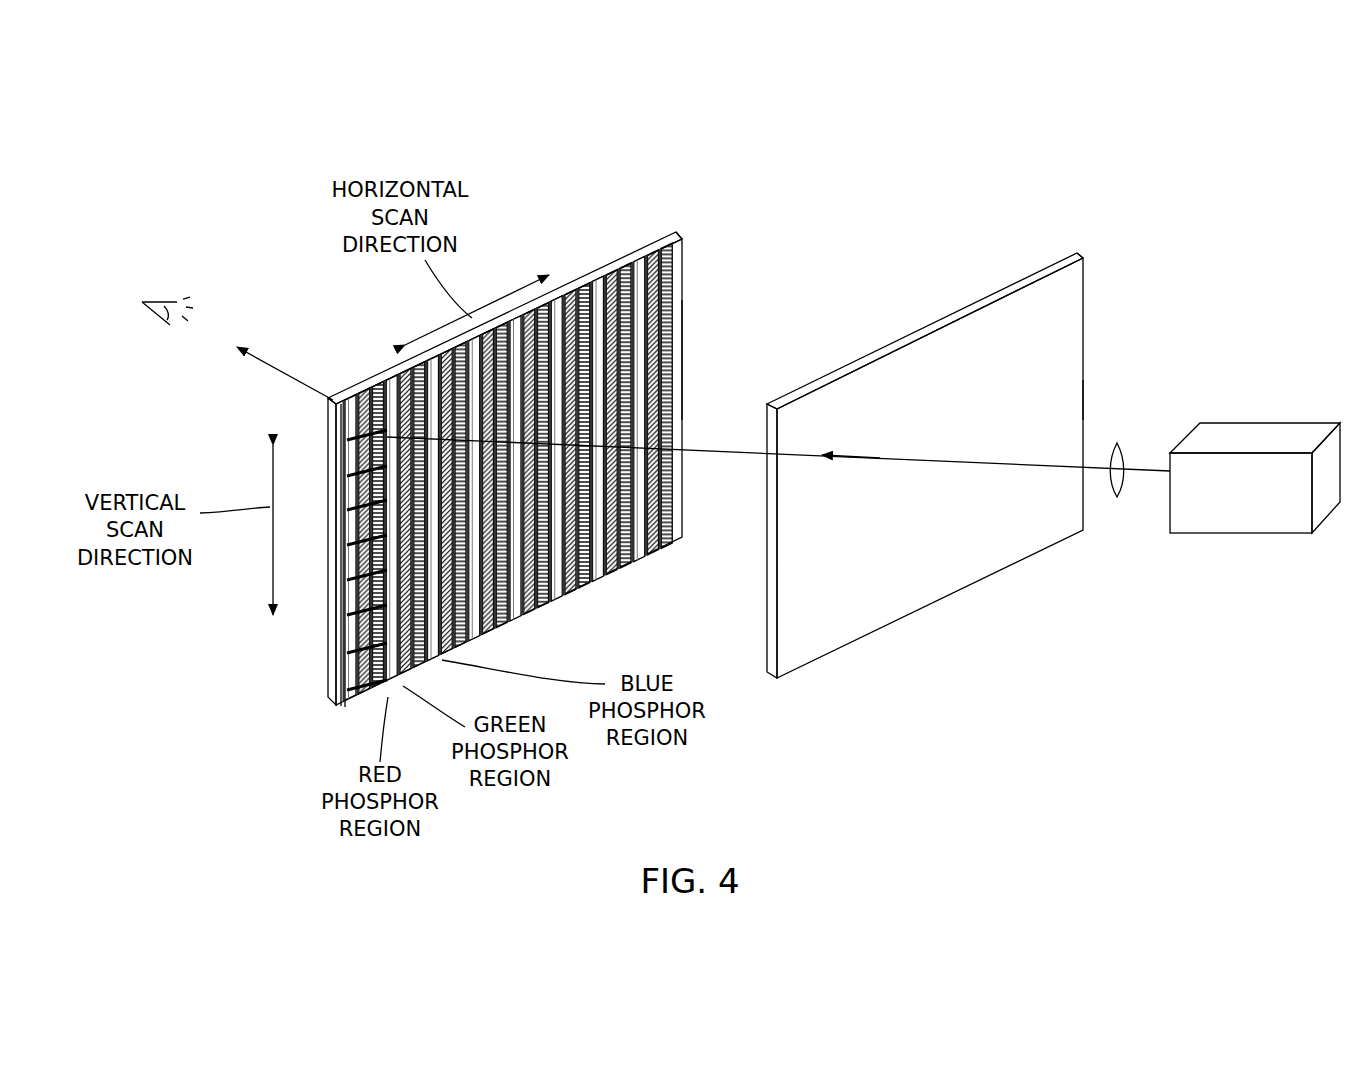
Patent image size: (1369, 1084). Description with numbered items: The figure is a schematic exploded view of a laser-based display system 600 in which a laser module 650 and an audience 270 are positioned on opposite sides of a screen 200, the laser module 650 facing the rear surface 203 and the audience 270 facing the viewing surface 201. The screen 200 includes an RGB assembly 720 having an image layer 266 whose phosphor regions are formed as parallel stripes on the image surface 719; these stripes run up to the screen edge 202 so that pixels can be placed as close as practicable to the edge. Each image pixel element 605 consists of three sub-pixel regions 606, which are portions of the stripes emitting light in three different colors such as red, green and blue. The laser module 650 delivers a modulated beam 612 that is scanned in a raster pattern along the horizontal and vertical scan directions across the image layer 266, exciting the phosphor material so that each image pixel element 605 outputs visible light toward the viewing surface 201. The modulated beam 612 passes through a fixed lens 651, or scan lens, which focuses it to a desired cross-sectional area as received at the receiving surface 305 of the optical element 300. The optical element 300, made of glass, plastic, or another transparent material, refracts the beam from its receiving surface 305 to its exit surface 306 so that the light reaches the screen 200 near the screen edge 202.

The laser-based display system 600 is at (1121, 170).
The screen 200 is at (616, 436).
The viewing surface 201 is at (650, 232).
The screen edge 202 is at (624, 256).
The RGB assembly 720 is at (690, 262).
The image layer 266 is at (683, 337).
The image surface 719 is at (745, 381).
The image pixel element 605 is at (336, 430).
The sub-pixel region 606 is at (366, 399).
The audience 270 is at (152, 318).
The optical element 300 is at (1088, 270).
The receiving surface 305 is at (1068, 323).
The exit surface 306 is at (1076, 254).
The rear surface 203 is at (1091, 398).
The modulated beam 612 is at (1146, 473).
The fixed lens 651 is at (1116, 499).
The laser module 650 is at (1249, 412).